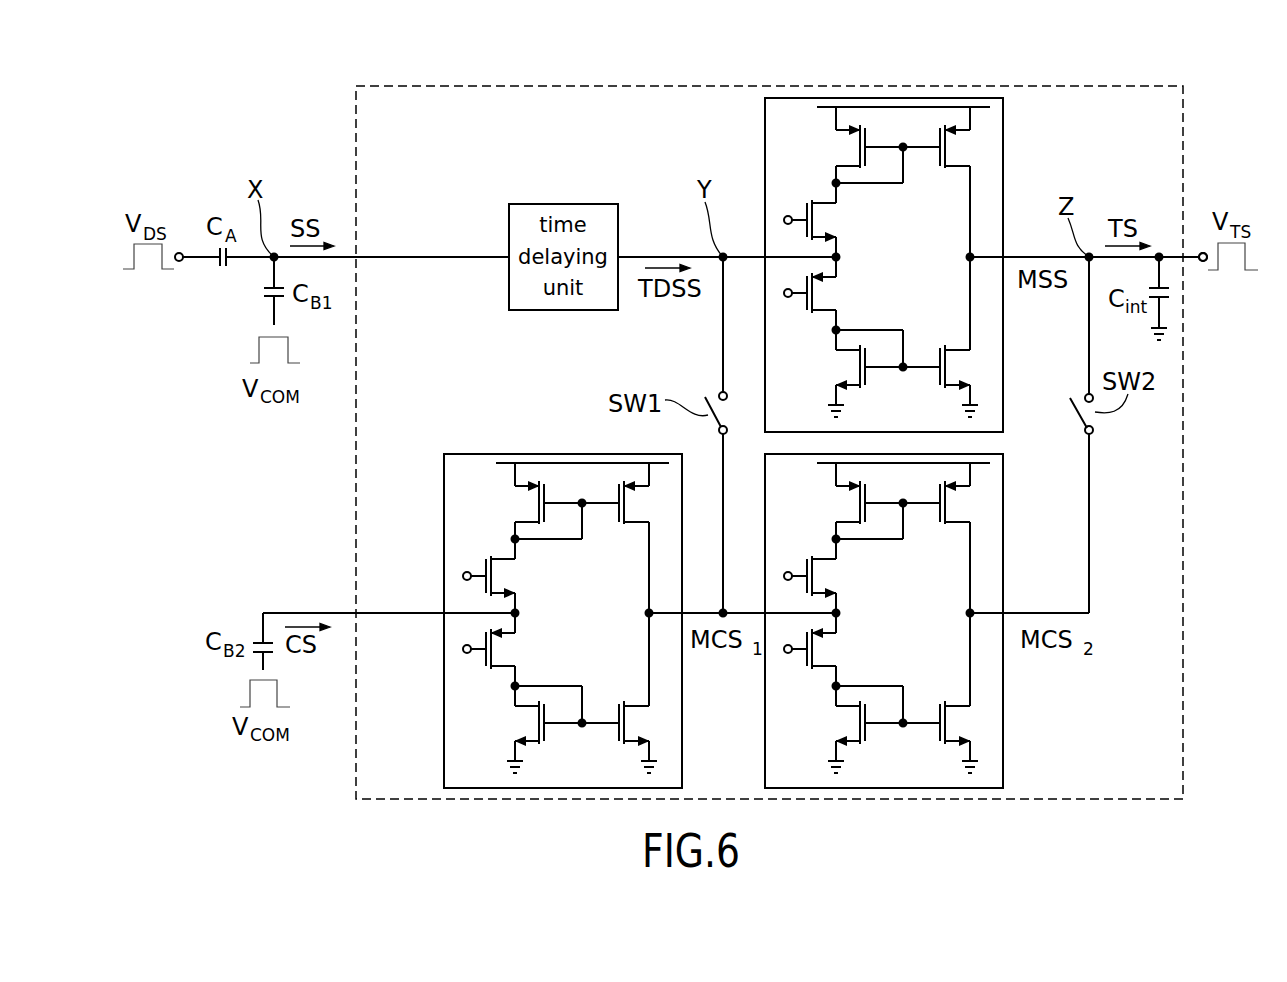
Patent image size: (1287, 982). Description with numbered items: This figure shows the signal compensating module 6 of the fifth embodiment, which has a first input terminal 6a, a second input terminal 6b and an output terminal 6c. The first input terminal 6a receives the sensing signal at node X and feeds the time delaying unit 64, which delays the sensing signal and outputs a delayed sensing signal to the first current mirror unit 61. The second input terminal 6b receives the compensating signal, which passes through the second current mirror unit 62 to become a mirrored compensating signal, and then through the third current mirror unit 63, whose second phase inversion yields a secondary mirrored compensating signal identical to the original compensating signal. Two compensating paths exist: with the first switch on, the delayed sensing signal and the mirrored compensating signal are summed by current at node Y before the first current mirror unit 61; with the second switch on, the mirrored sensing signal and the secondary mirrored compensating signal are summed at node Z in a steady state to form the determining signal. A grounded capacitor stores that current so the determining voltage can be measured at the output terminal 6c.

The signal compensating module 6 is at (1184, 128).
The first input terminal 6a is at (356, 257).
The second input terminal 6b is at (356, 613).
The output terminal 6c is at (1200, 254).
The first current mirror unit 61 is at (1003, 119).
The second current mirror unit 62 is at (443, 691).
The third current mirror unit 63 is at (1003, 690).
The time delaying unit 64 is at (562, 204).